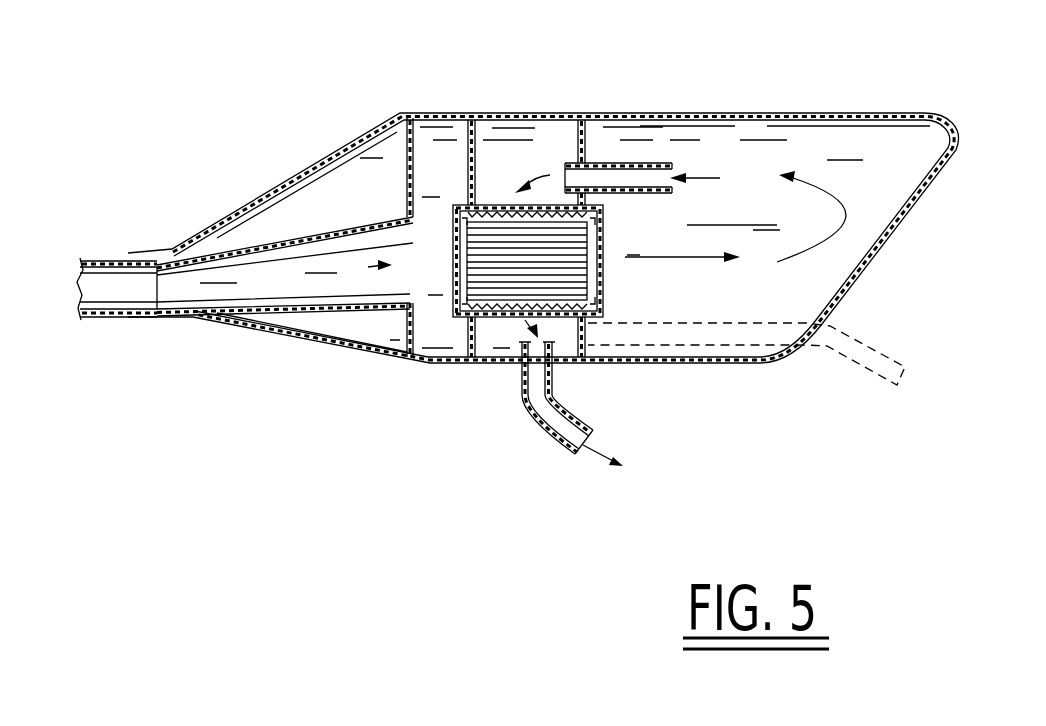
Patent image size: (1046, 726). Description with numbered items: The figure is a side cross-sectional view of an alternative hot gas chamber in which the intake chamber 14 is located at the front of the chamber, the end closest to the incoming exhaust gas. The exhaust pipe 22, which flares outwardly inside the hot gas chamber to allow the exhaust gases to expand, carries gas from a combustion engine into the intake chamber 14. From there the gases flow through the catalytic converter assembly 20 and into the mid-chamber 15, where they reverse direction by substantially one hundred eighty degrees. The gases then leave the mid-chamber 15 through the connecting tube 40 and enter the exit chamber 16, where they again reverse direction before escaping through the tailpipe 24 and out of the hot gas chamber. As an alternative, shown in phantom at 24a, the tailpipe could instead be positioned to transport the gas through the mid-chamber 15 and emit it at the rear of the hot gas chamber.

The intake chamber 14 is at (452, 132).
The mid-chamber 15 is at (862, 78).
The exit chamber 16 is at (570, 73).
The catalytic converter assembly 20 is at (455, 398).
The exhaust pipe 22 is at (272, 243).
The tailpipe 24 is at (553, 440).
The alternative tailpipe position 24a is at (750, 398).
The connecting tube 40 is at (638, 163).